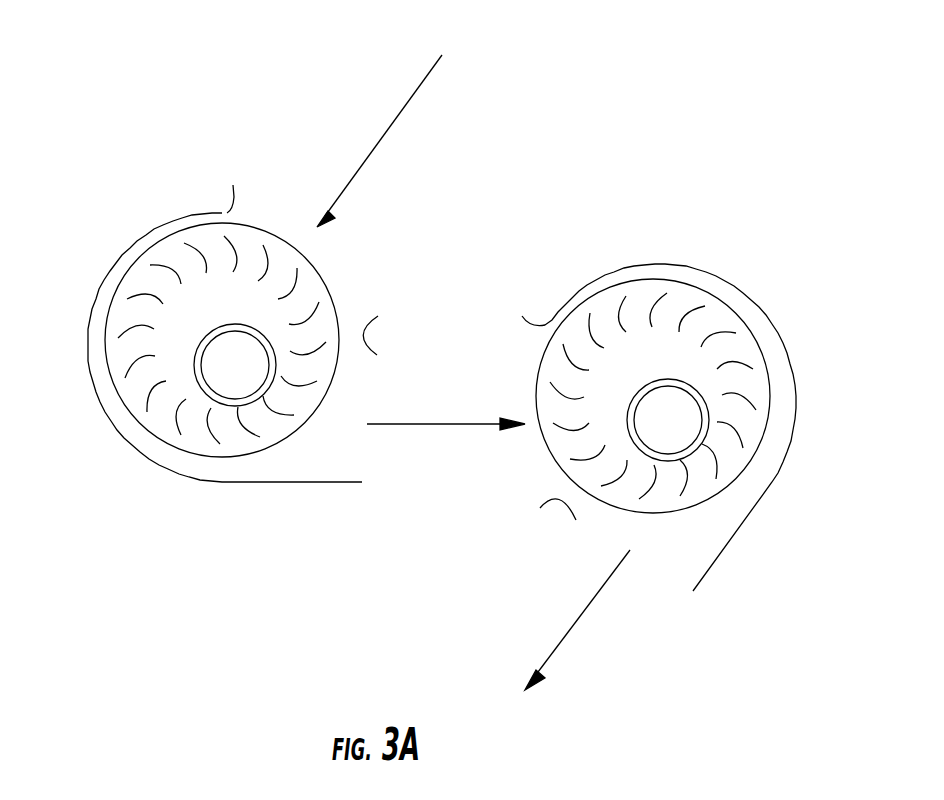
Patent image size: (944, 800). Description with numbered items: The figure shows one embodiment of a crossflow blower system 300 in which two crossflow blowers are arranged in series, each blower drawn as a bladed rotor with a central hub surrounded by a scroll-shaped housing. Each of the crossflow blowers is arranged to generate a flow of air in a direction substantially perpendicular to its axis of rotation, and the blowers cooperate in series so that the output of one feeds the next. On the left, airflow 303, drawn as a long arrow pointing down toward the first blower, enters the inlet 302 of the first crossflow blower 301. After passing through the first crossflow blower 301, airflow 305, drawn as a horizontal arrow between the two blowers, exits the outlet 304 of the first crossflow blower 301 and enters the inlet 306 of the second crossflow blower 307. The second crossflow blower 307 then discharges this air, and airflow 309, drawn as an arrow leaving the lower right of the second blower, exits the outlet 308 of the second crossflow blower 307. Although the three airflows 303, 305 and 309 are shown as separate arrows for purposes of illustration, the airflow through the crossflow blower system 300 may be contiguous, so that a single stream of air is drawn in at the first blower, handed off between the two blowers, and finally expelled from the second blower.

The crossflow blower system 300 is at (753, 98).
The crossflow blower 301 is at (116, 427).
The inlet 302 is at (349, 270).
The airflow 303 is at (425, 72).
The outlet 304 is at (377, 398).
The airflow 305 is at (468, 428).
The inlet 306 is at (560, 468).
The crossflow blower 307 is at (775, 330).
The outlet 308 is at (663, 570).
The airflow 309 is at (567, 637).